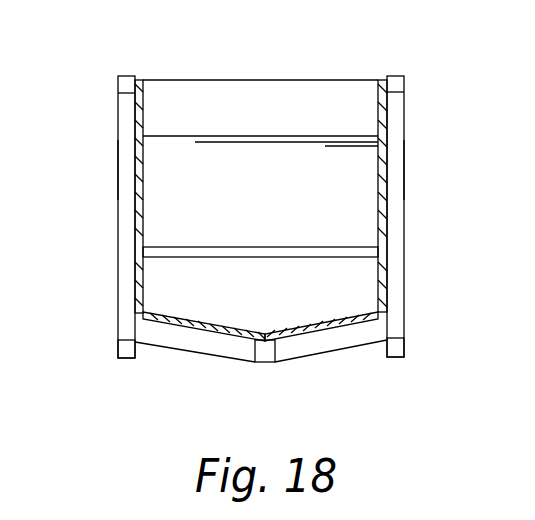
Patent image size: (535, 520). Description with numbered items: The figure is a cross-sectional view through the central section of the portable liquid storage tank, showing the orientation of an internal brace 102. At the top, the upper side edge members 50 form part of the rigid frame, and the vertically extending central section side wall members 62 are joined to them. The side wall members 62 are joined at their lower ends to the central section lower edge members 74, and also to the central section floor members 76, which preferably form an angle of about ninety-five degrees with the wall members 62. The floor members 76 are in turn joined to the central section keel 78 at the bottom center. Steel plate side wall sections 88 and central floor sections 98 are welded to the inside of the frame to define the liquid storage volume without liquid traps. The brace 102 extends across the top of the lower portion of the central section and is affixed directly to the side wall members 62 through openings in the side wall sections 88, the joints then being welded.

The upper side edge member 50 is at (118, 80).
The central section side wall member 62 is at (118, 171).
The side wall section 88 is at (143, 100).
The internal brace 102 is at (252, 247).
The central floor section 98 is at (148, 318).
The central section floor member 76 is at (188, 352).
The central section keel 78 is at (268, 360).
The central section lower edge member 74 is at (119, 352).